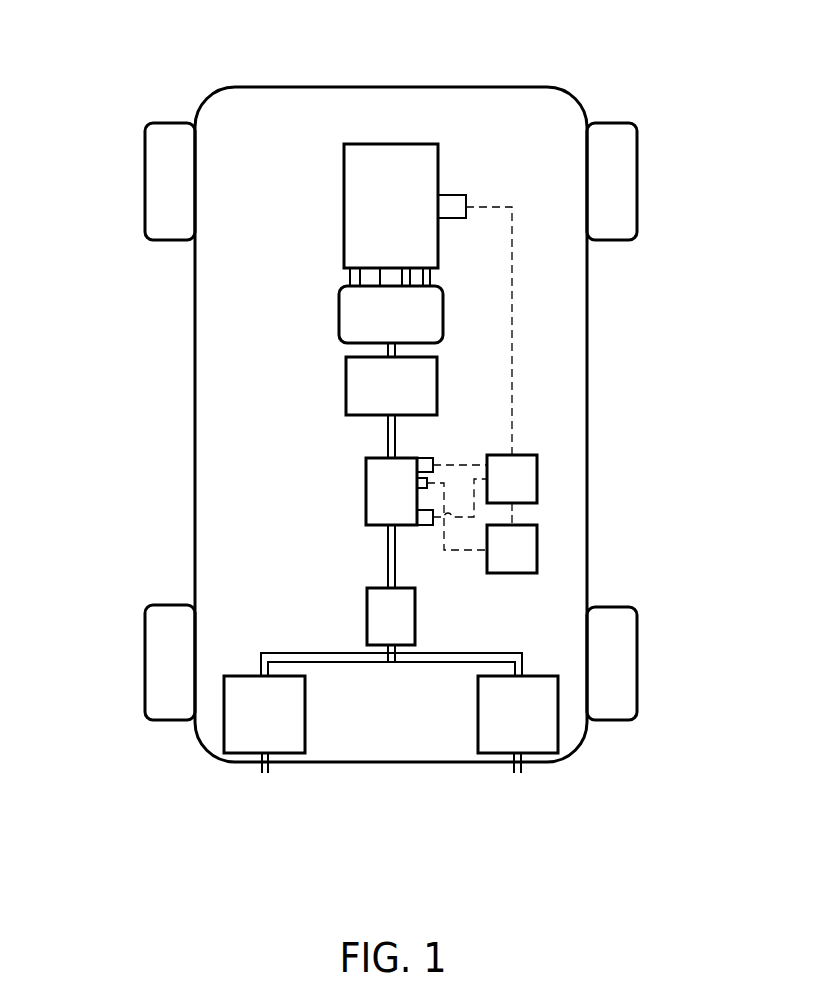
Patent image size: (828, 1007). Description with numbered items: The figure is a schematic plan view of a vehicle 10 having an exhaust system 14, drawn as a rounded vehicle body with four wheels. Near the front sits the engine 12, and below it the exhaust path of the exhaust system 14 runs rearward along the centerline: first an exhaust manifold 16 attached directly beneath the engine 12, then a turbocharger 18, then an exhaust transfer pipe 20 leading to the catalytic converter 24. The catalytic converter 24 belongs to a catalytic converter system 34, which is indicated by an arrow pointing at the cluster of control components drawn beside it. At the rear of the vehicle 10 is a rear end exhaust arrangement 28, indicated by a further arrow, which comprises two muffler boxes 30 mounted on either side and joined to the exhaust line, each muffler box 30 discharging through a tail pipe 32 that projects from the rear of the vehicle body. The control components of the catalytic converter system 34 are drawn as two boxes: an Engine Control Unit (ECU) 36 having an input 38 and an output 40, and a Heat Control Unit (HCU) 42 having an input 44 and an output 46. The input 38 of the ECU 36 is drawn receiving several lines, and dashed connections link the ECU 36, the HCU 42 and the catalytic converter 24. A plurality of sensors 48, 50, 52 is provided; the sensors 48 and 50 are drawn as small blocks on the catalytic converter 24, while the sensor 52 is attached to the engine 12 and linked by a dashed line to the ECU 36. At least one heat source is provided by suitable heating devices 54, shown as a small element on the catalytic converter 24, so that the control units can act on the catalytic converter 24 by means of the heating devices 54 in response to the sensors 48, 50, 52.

The vehicle 10 is at (155, 52).
The engine 12 is at (393, 143).
The exhaust system 14 is at (247, 376).
The exhaust manifold 16 is at (339, 315).
The turbocharger 18 is at (346, 385).
The exhaust transfer pipe 20 is at (388, 435).
The catalytic converter 24 is at (387, 501).
The rear end exhaust arrangement 28 is at (349, 738).
The muffler boxes 30 is at (224, 738).
The tail pipes 32 is at (268, 770).
The catalytic converter system 34 is at (565, 497).
The Engine Control Unit (ECU) 36 is at (537, 500).
The input 38 is at (468, 465).
The output 40 is at (513, 505).
The Heat Control Unit (HCU) 42 is at (537, 538).
The input 44 is at (514, 518).
The output 46 is at (473, 552).
The sensor 48 is at (427, 458).
The sensor 50 is at (423, 525).
The sensor 52 is at (458, 195).
The heating devices 54 is at (423, 490).